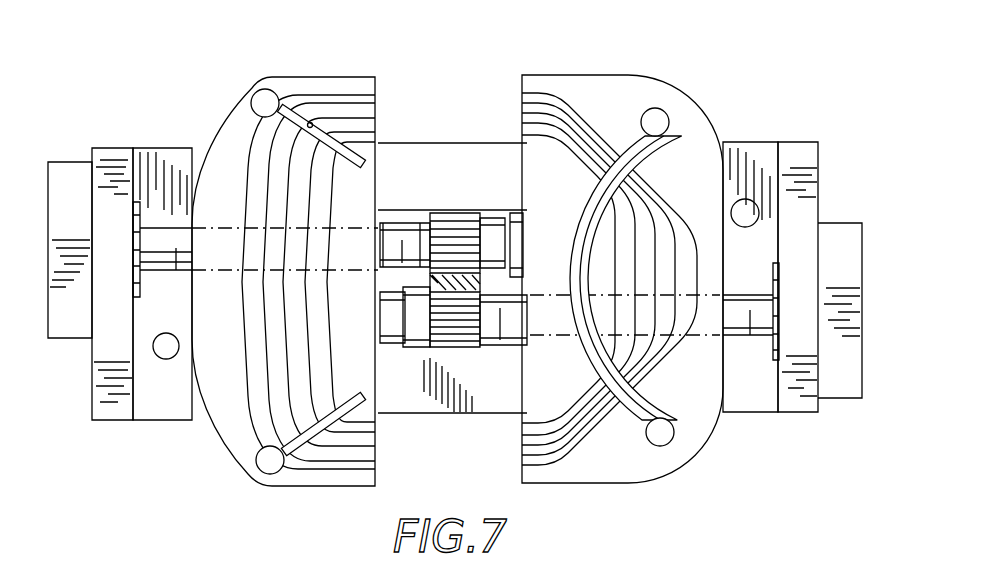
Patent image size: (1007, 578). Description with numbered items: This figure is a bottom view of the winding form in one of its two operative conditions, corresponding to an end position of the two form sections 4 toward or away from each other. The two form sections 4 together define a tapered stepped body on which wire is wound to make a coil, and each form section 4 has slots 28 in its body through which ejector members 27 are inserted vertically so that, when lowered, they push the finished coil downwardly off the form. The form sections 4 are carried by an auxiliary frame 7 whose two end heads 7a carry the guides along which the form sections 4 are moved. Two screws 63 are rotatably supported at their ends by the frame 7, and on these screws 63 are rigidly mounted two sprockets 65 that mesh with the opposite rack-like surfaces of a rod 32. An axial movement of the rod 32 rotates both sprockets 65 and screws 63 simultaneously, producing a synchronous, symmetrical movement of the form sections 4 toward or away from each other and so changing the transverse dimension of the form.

The form sections 4 is at (205, 131).
The auxiliary frame 7 is at (90, 160).
The end heads 7a is at (120, 408).
The ejector members 27 is at (270, 89).
The slots 28 is at (318, 122).
The rod 32 is at (483, 277).
The screws 63 is at (163, 240).
The sprockets 65 is at (460, 220).